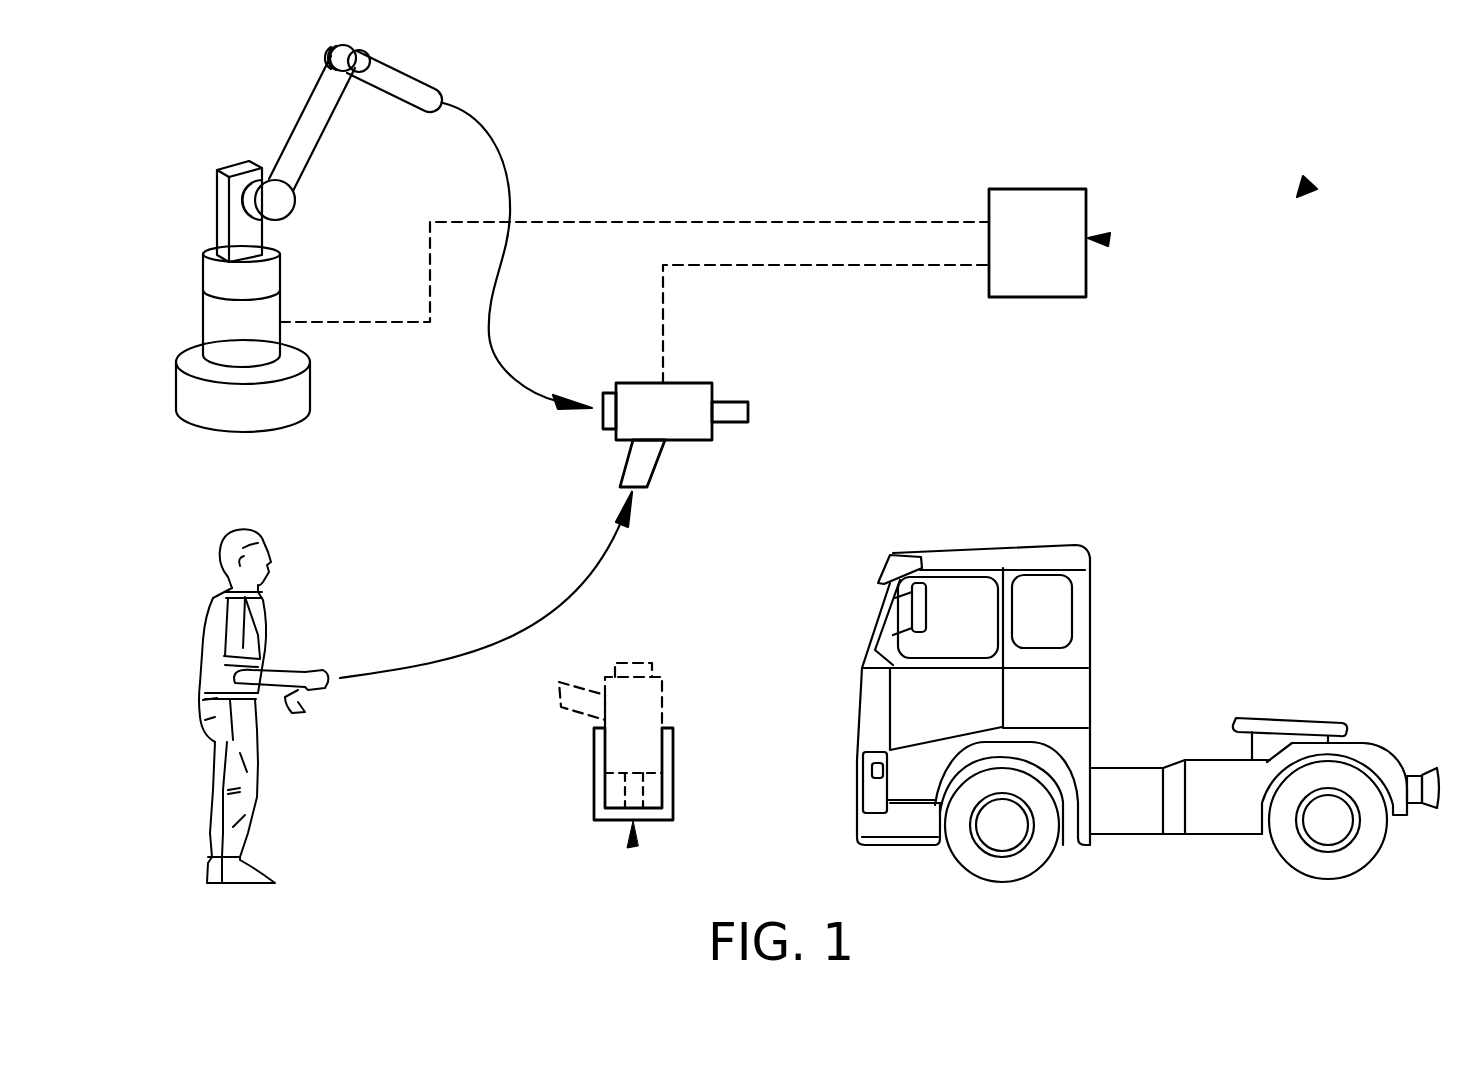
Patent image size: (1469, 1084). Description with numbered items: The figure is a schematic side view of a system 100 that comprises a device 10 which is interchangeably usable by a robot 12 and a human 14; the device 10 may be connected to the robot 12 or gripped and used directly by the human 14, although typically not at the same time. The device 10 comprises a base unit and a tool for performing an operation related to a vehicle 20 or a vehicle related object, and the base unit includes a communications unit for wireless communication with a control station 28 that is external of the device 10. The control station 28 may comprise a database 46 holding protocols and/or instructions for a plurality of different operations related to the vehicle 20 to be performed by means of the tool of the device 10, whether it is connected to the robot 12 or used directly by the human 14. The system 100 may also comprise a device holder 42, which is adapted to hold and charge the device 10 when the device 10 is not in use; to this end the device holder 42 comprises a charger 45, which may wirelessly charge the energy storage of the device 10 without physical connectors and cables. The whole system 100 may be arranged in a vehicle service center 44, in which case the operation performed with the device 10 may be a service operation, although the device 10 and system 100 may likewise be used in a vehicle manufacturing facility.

The device 10 is at (637, 383).
The robot 12 is at (200, 268).
The human 14 is at (205, 613).
The vehicle 20 is at (1023, 545).
The control station 28 is at (1101, 244).
The device holder 42 is at (631, 828).
The vehicle service center 44 is at (917, 435).
The charger 45 is at (594, 773).
The database 46 is at (1033, 189).
The system 100 is at (1310, 183).